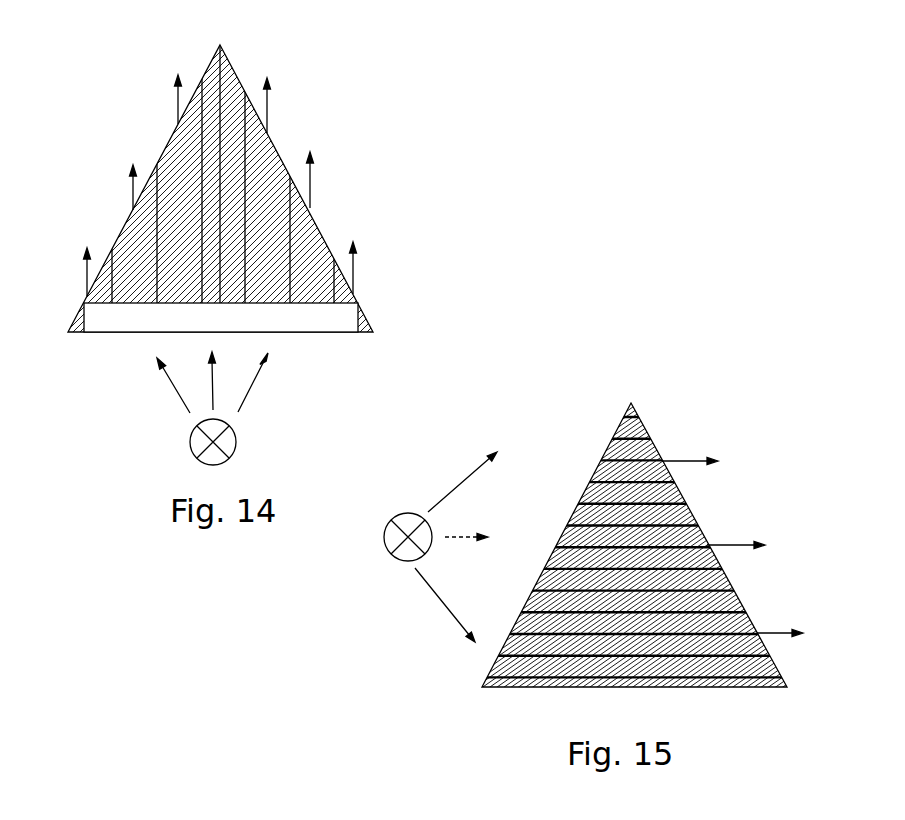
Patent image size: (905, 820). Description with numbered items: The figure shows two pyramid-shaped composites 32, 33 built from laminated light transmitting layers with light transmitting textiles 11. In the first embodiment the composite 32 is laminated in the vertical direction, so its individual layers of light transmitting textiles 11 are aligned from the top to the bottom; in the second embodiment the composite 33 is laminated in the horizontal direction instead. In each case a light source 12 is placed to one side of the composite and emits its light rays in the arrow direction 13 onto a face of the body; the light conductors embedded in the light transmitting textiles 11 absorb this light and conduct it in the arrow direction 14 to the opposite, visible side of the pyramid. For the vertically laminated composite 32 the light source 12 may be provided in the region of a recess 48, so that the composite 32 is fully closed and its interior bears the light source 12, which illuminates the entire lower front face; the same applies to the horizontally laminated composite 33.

In FIG. 14, the light transmitting textiles 11 is at (288, 173).
In FIG. 15, the light transmitting textiles 11 is at (683, 500).
In FIG. 14, the light source 12 is at (197, 447).
In FIG. 15, the light source 12 is at (395, 533).
In FIG. 14, the arrow direction of emitted light rays 13 is at (168, 382).
In FIG. 15, the arrow direction of emitted light rays 13 is at (435, 597).
In FIG. 14, the arrow direction of conducted light 14 is at (177, 102).
In FIG. 15, the arrow direction of conducted light 14 is at (687, 457).
In FIG. 14, the composite 32 is at (327, 178).
In FIG. 15, the composite 33 is at (644, 552).
In FIG. 14, the recess 48 is at (340, 313).